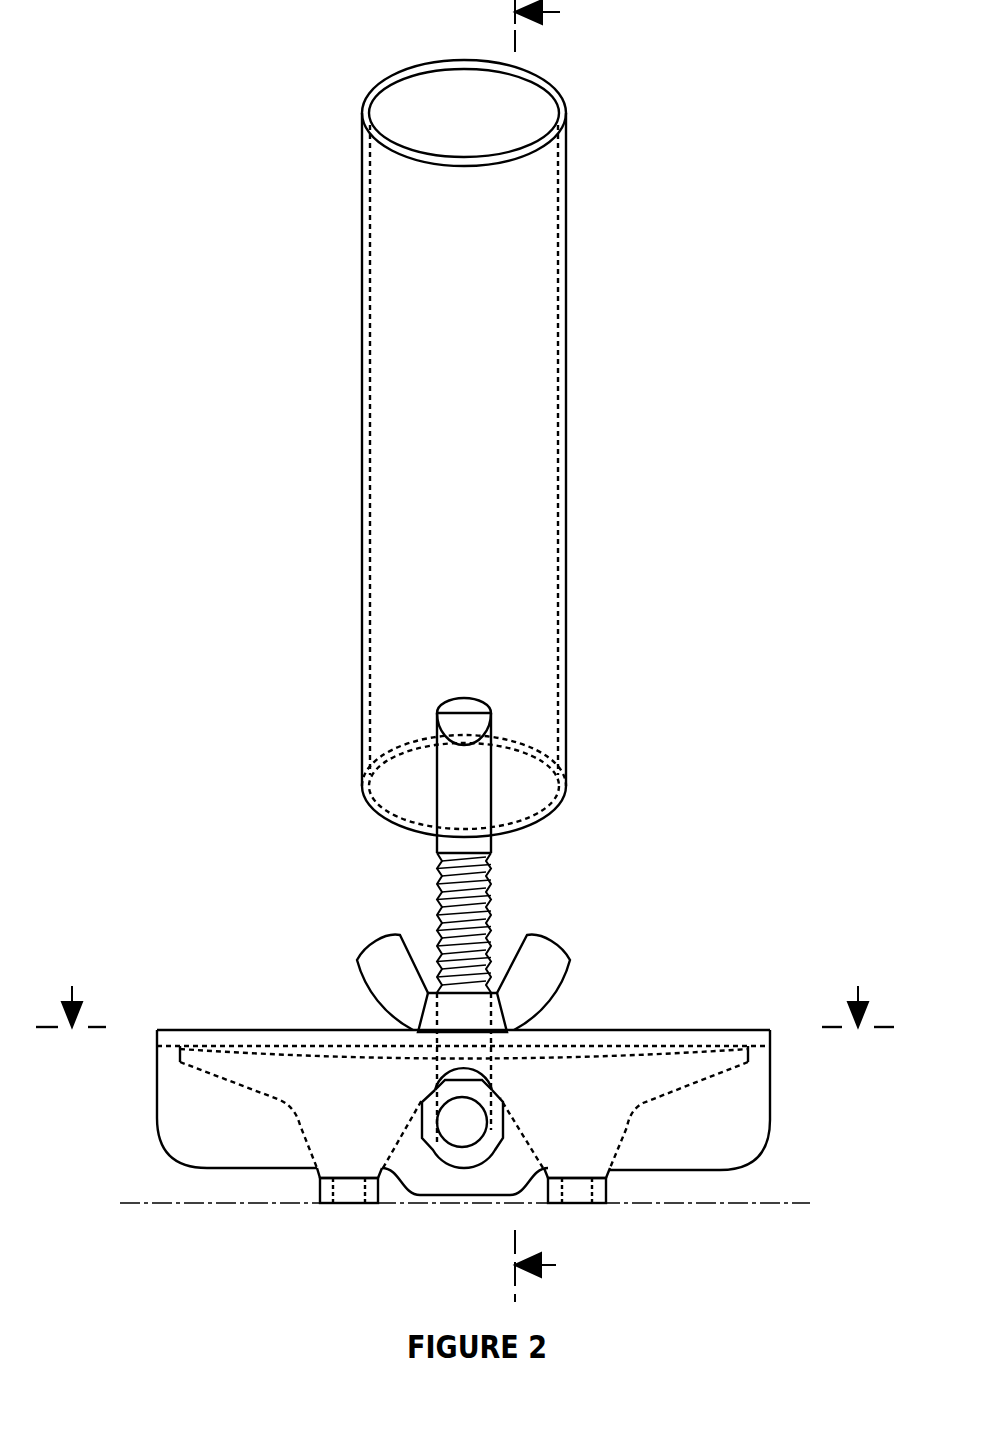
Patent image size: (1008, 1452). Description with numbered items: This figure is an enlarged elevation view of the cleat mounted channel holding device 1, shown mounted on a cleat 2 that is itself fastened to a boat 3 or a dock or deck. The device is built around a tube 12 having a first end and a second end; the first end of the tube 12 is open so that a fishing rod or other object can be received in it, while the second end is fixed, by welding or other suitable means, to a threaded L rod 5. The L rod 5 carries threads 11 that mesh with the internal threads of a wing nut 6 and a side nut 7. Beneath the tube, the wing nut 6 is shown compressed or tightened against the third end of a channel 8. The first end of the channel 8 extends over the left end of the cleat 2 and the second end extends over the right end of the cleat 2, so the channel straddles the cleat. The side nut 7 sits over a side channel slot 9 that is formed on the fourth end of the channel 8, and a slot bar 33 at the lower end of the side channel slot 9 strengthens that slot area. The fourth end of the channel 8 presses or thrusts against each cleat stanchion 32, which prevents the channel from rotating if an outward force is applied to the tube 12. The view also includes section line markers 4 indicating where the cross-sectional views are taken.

The cleat mounted channel holding device 1 is at (287, 1030).
The cleat 2 is at (227, 1080).
The boat 3 is at (742, 1203).
The section line 4- 4 is at (465, 993).
The threaded L rod 5 is at (491, 882).
The wing nut 6 is at (555, 940).
The side nut 7 is at (464, 1162).
The channel 8 is at (628, 1030).
The side channel slot 9 is at (492, 1068).
The threads 11 is at (437, 882).
The tube 12 is at (566, 585).
The cleat stanchion 32 is at (300, 1138).
The slot bar 33 is at (435, 1195).